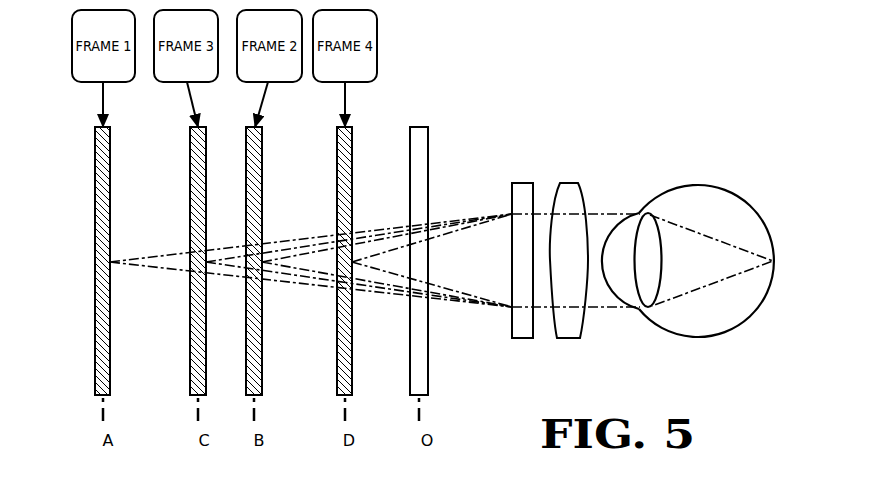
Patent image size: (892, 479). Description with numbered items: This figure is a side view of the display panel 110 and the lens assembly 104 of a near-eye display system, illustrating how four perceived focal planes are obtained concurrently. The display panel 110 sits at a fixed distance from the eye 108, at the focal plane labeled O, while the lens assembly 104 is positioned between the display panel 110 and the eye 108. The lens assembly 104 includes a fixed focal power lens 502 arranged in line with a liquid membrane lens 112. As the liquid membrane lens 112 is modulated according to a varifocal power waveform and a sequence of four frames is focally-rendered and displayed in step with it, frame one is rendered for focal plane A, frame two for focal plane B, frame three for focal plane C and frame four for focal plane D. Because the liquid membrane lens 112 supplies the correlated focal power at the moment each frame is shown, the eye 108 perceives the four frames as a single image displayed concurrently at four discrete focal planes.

The display panel 110 is at (428, 182).
The liquid membrane lens 112 is at (522, 183).
The fixed focal power lens 502 is at (568, 183).
The eye 108 is at (717, 190).
The lens assembly 104 is at (568, 257).